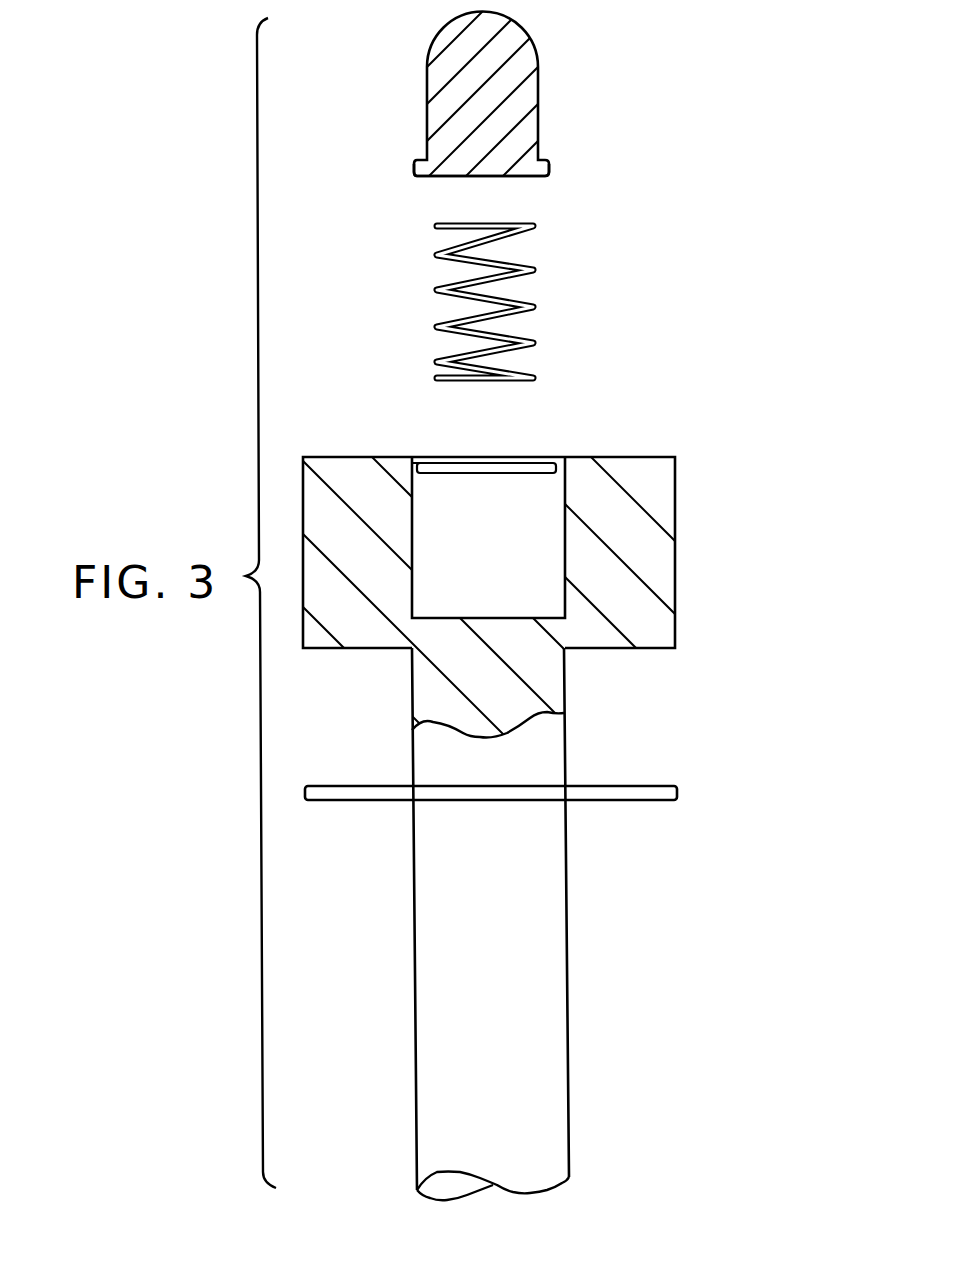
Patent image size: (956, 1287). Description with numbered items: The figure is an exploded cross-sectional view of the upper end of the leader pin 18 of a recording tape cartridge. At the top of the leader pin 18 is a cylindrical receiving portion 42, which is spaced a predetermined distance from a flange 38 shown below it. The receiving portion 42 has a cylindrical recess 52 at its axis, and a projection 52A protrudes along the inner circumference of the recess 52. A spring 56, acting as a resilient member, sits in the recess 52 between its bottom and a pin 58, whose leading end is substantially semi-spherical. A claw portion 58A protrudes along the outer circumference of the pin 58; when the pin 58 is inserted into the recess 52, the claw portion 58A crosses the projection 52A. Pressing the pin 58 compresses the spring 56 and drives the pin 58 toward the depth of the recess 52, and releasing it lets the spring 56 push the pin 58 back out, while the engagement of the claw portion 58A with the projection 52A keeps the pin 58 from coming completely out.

The leader pin 18 is at (710, 148).
The pin 58 is at (526, 99).
The claw portion 58A is at (549, 170).
The spring 56 is at (533, 268).
The recess 52 is at (566, 525).
The projection 52A is at (556, 462).
The receiving portion 42 is at (660, 577).
The flange 38 is at (640, 787).